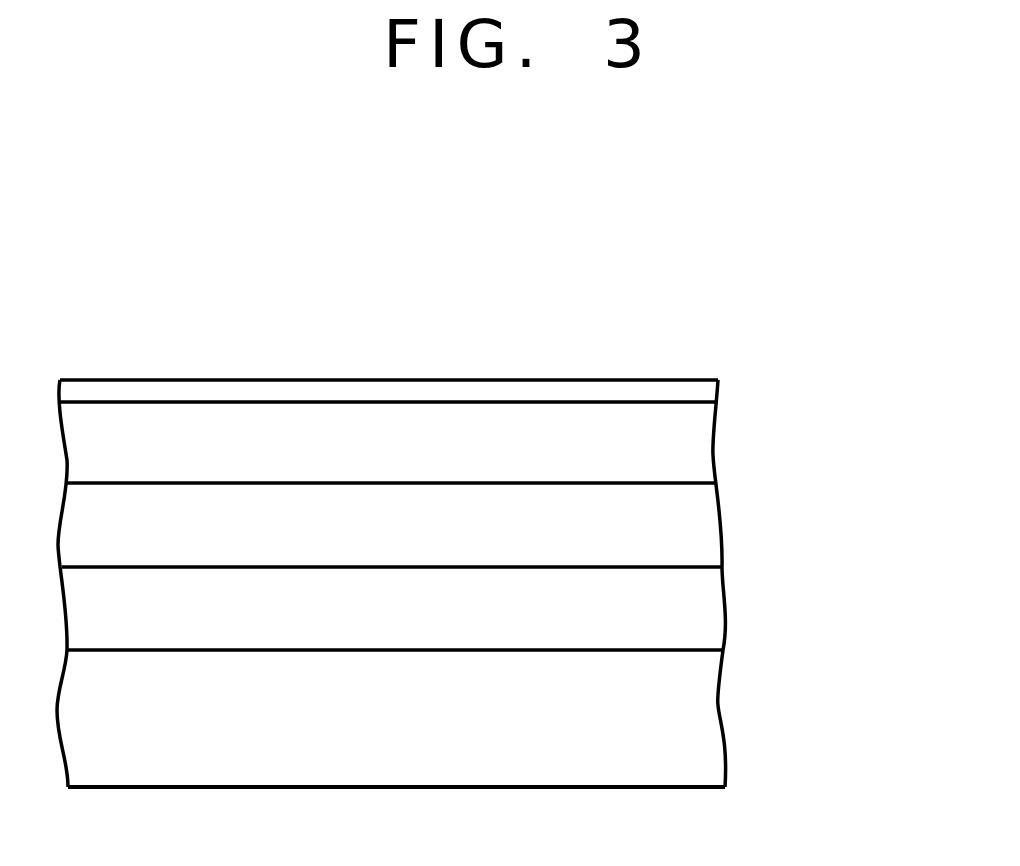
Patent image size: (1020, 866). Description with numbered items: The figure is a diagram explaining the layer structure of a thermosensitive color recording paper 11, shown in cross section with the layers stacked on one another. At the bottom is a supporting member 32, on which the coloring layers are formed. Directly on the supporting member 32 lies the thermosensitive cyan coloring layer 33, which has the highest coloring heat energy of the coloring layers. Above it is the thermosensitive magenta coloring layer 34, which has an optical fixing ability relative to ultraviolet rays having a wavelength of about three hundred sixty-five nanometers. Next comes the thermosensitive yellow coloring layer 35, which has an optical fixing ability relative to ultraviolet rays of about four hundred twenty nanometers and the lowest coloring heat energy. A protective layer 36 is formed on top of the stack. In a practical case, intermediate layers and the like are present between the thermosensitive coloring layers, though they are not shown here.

The thermosensitive color recording paper 11 is at (400, 380).
The supporting member 32 is at (705, 723).
The thermosensitive cyan coloring layer 33 is at (705, 617).
The thermosensitive magenta coloring layer 34 is at (703, 532).
The thermosensitive yellow coloring layer 35 is at (692, 455).
The protective layer 36 is at (700, 393).